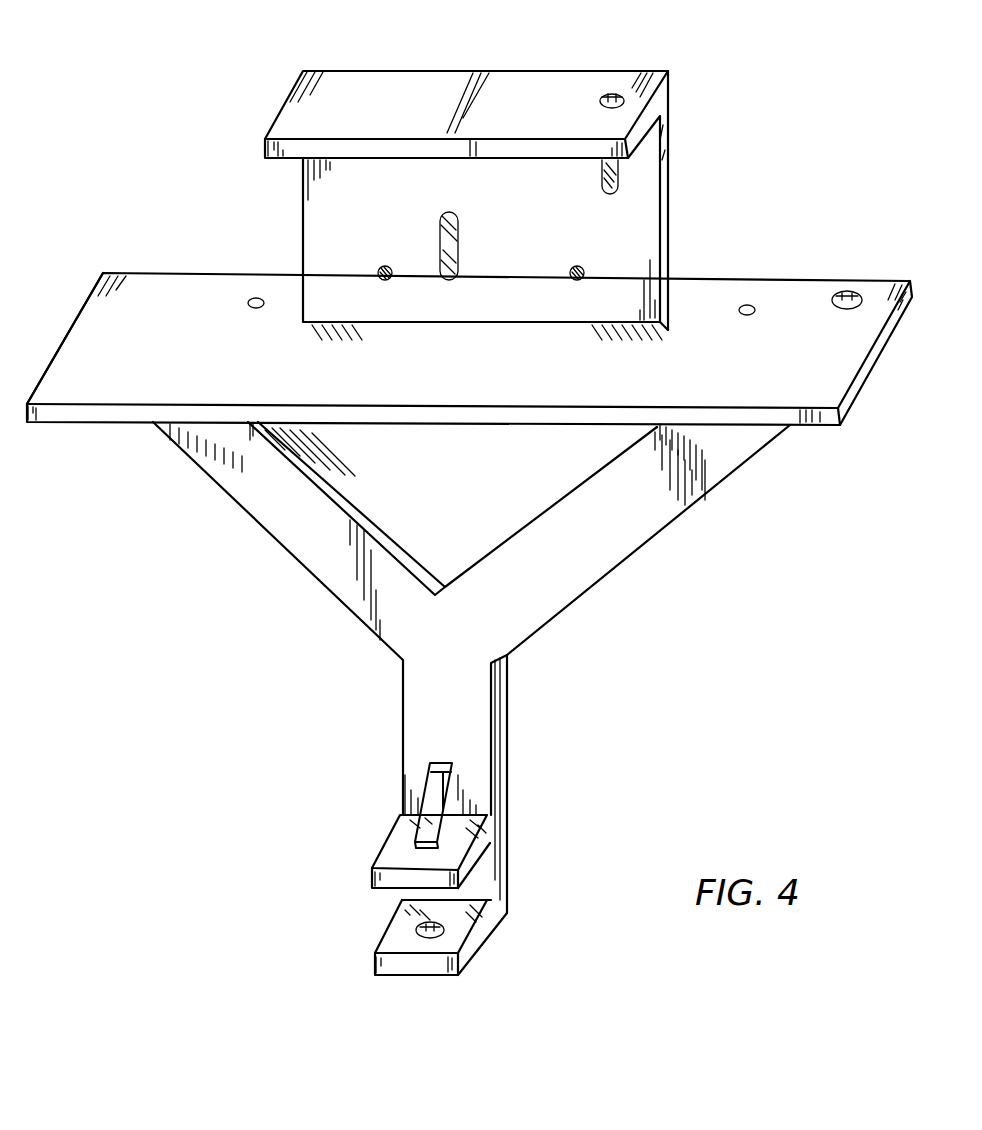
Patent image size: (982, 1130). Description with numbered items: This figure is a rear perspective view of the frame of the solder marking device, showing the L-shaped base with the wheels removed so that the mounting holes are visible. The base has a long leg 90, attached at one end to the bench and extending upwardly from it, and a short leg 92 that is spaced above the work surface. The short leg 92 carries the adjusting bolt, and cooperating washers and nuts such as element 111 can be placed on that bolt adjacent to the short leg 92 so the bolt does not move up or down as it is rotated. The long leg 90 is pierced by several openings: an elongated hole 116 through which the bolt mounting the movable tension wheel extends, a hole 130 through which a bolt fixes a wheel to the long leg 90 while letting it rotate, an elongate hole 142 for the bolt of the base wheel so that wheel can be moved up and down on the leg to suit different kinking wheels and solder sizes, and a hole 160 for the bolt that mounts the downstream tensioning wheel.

The long leg 90 is at (303, 210).
The short leg 92 is at (277, 117).
The washer and nut 111 is at (606, 92).
The elongated hole 116 is at (628, 172).
The hole 130 is at (596, 248).
The elongate hole 142 is at (459, 245).
The hole 160 is at (383, 266).